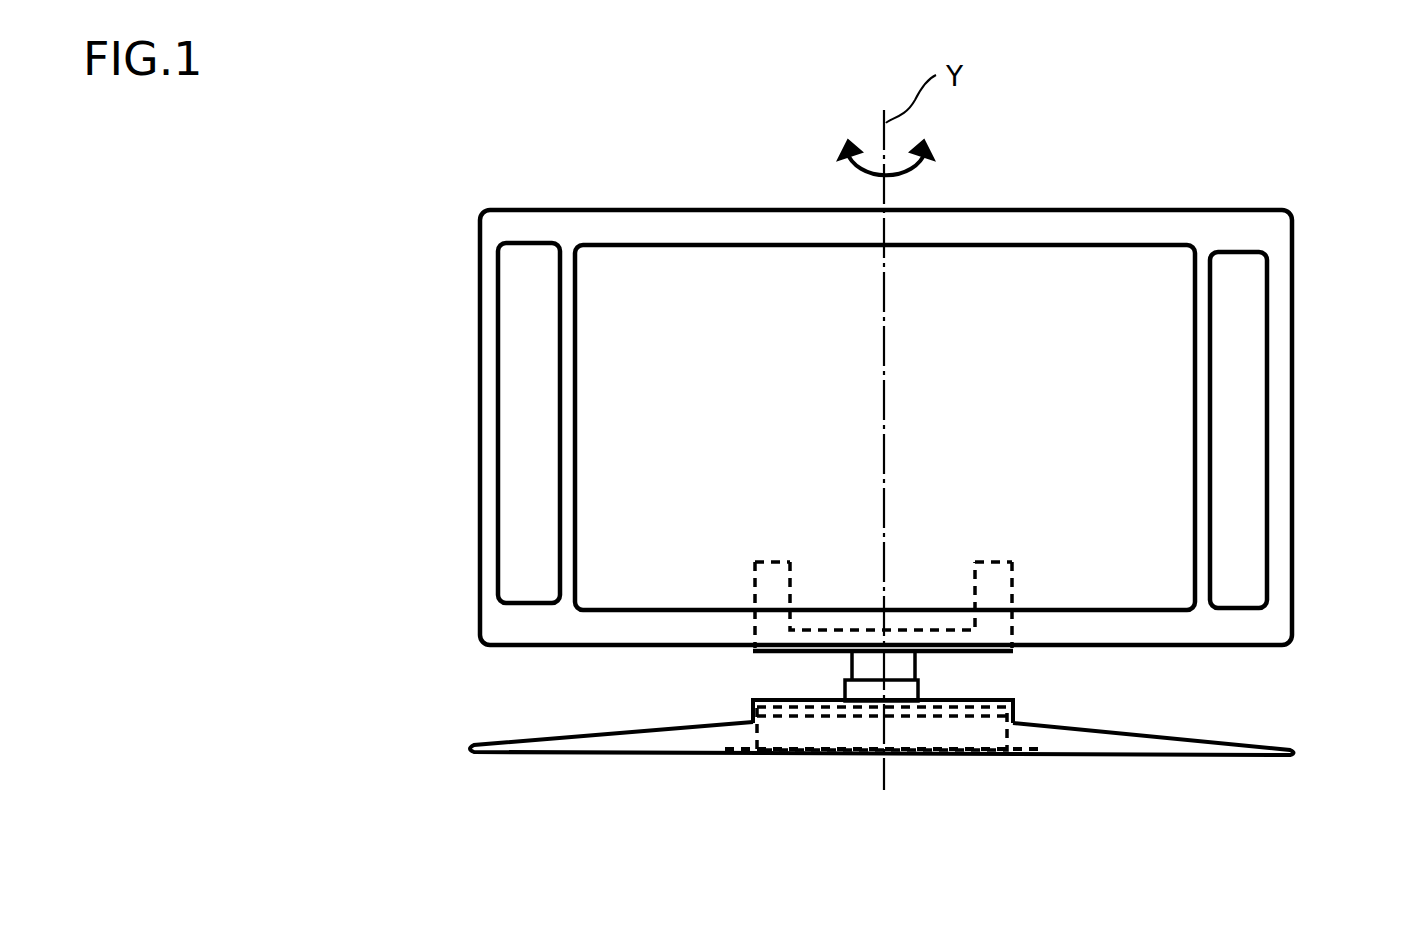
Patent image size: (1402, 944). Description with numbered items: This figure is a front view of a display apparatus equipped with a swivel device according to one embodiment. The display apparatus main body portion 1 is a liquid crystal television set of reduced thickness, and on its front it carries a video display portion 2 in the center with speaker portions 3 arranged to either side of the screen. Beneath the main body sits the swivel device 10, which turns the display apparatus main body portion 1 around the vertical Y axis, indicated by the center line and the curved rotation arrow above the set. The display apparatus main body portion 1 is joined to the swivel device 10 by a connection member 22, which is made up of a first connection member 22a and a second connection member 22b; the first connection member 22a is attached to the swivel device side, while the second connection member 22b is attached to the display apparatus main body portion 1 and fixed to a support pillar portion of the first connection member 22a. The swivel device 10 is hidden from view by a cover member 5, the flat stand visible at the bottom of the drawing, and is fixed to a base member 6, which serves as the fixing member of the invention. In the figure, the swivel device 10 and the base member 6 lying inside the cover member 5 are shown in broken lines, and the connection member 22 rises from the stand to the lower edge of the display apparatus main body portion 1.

The display apparatus main body portion 1 is at (554, 210).
The video display portion 2 is at (1118, 270).
The speaker portions 3 is at (527, 316).
The cover member 5 is at (575, 736).
The base member 6 is at (735, 752).
The swivel device 10 is at (980, 730).
The connection member 22 is at (866, 732).
The first connection member 22a is at (782, 653).
The second connection member 22b is at (867, 667).